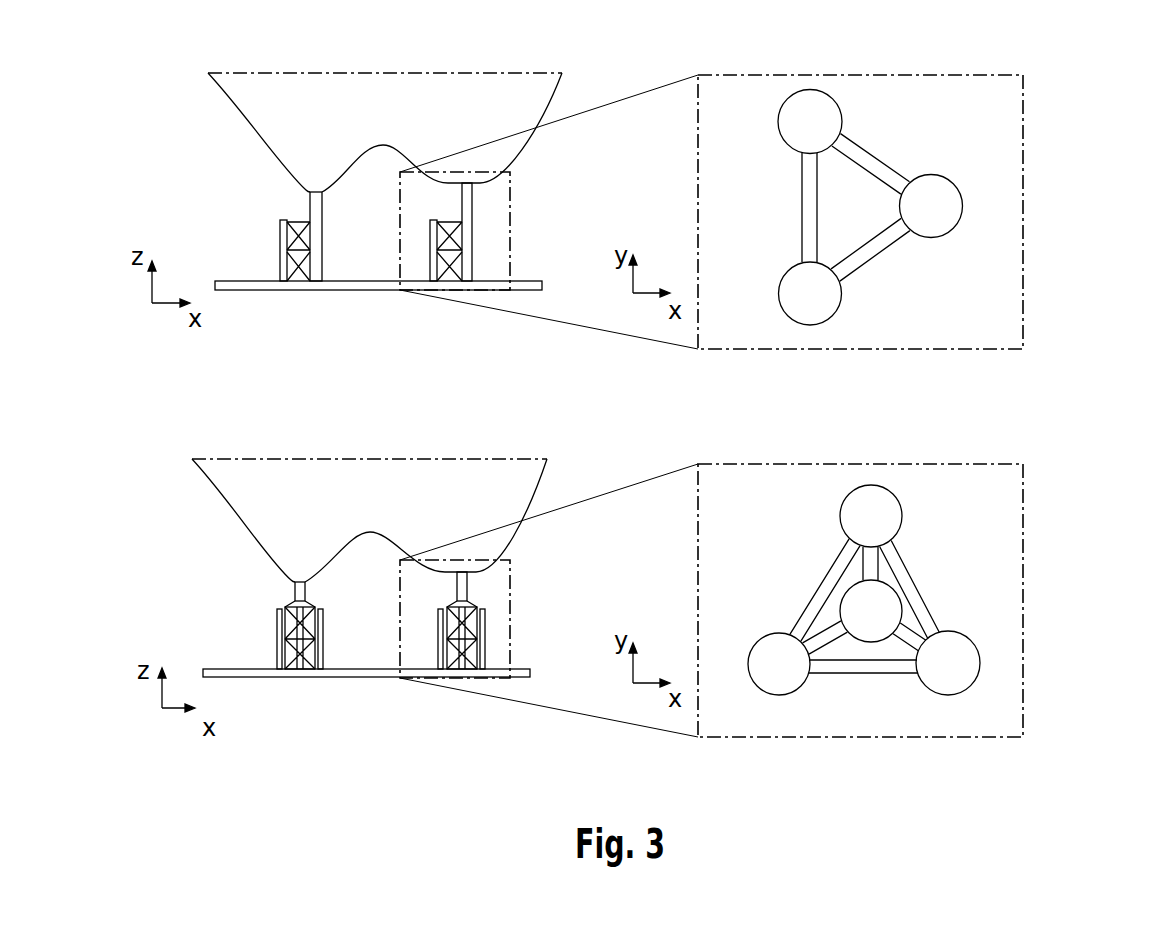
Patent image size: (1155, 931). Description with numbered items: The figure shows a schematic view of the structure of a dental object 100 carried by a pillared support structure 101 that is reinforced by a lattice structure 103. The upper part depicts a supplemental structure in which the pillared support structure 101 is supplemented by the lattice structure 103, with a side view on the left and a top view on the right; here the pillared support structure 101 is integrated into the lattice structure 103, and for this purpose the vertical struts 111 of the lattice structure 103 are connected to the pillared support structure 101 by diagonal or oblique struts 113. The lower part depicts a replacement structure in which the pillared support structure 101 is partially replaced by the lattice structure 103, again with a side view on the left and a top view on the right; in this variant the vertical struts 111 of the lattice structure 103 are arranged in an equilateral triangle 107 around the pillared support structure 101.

The dental object 100 is at (343, 137).
The pillared support structure 101 is at (316, 284).
The lattice structure 103 is at (297, 292).
The equilateral triangle 107 is at (915, 590).
The vertical struts 111 is at (818, 297).
The diagonal or oblique struts 113 is at (285, 238).